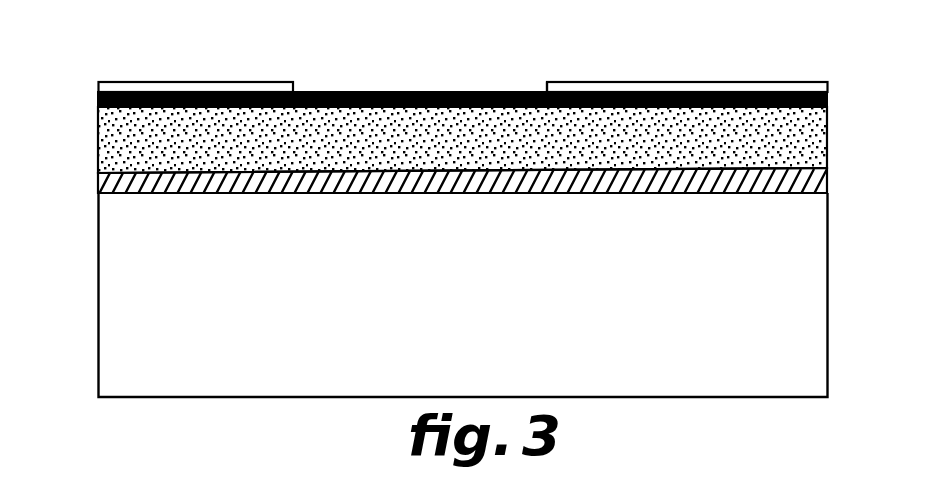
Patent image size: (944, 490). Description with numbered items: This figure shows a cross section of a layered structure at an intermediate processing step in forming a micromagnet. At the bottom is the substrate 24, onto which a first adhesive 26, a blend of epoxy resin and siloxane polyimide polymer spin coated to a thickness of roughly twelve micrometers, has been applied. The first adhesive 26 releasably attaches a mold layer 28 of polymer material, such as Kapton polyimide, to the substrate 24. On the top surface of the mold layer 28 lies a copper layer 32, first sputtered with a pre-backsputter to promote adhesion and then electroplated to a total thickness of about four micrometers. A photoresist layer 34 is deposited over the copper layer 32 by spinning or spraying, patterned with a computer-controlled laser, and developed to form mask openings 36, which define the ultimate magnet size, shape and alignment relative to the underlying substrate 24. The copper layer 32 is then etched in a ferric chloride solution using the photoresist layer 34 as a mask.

The substrate 24 is at (493, 311).
The first adhesive 26 is at (98, 177).
The mold layer 28 is at (828, 142).
The copper layer 32 is at (828, 98).
The photoresist layer 34 is at (643, 86).
The mask openings 36 is at (293, 86).